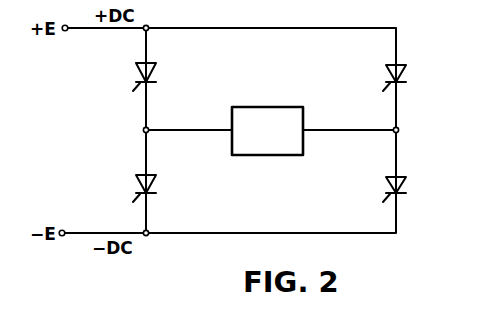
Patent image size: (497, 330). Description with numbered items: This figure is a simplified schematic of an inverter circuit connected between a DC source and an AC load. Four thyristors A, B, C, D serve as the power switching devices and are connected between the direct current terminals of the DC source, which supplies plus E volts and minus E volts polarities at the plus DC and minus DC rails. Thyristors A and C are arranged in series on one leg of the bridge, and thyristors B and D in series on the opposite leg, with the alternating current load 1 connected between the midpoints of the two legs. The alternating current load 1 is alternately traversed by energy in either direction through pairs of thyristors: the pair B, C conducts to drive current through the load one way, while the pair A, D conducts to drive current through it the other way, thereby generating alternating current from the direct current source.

The alternating current load 1 is at (292, 107).
The thyristor A is at (137, 77).
The thyristor B is at (401, 78).
The thyristor C is at (138, 188).
The thyristor D is at (401, 189).